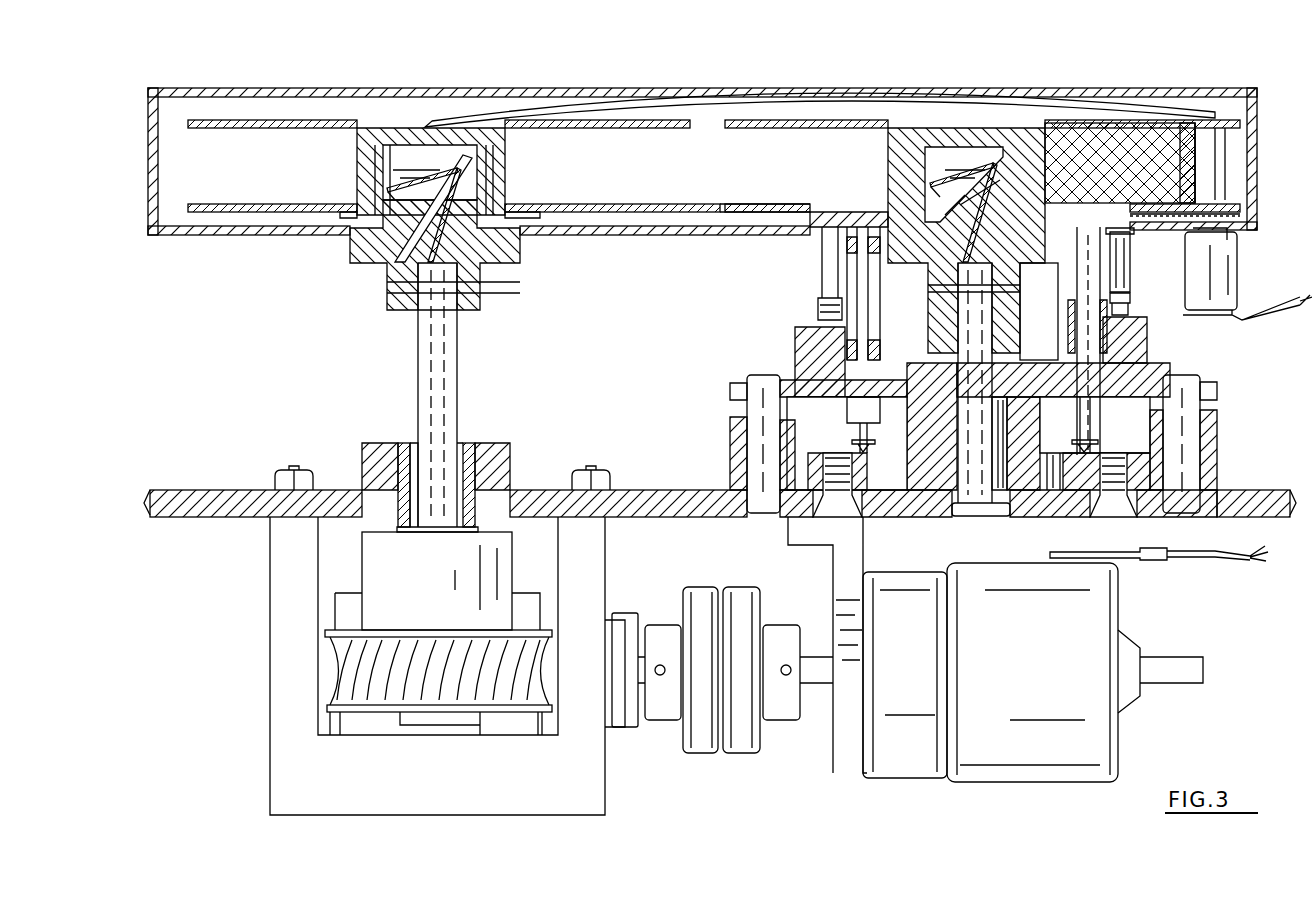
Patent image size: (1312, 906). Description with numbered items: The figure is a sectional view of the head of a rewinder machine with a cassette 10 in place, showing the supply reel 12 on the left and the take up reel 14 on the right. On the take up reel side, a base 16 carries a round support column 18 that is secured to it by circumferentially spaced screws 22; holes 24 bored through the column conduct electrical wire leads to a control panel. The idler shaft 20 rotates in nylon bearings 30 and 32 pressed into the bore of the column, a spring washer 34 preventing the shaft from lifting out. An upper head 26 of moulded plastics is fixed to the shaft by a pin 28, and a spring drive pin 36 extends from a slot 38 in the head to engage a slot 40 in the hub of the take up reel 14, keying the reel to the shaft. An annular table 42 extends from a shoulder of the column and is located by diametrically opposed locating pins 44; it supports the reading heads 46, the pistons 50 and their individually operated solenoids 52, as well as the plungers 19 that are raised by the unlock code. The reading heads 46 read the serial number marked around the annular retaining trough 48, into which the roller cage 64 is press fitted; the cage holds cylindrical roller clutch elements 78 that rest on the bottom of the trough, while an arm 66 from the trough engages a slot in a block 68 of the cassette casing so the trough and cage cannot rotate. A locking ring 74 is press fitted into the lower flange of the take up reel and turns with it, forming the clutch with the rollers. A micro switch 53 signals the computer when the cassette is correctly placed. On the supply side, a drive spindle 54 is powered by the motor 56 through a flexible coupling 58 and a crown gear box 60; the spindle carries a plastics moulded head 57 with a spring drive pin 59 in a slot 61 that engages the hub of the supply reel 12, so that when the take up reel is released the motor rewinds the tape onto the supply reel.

The cassette 10 is at (1024, 82).
The supply reel 12 is at (285, 212).
The take up reel 14 is at (1148, 128).
The base 16 is at (1140, 517).
The support column 18 is at (1040, 480).
The plungers 19 is at (1118, 272).
The idler shaft 20 is at (930, 510).
The screws 22 is at (1115, 517).
The holes 24 is at (895, 460).
The upper head 26 is at (1012, 330).
The pin 28 is at (1012, 300).
The nylon bearing 30 is at (1012, 362).
The nylon bearing 32 is at (1020, 516).
The spring washer 34 is at (965, 503).
The spring drive pin 36 is at (965, 150).
The slot 38 is at (950, 160).
The slot 40 is at (918, 128).
The annular table 42 is at (1158, 385).
The locating pins 44 is at (758, 445).
The reading heads 46 is at (820, 262).
The annular retaining trough 48 is at (798, 222).
The pistons 50 is at (1118, 285).
The solenoid 52 is at (1128, 308).
The micro switch 53 is at (1242, 270).
The drive spindle 54 is at (445, 400).
The motor 56 is at (980, 748).
The plastics moulded head 57 is at (500, 96).
The flexible coupling 58 is at (700, 750).
The spring drive pin 59 is at (400, 170).
The crown gear box 60 is at (388, 685).
The slot 61 is at (450, 160).
The roller cage 64 is at (1110, 120).
The arm 66 is at (1190, 208).
The block 68 is at (1240, 216).
The locking ring 74 is at (1170, 176).
The cylindrical roller clutch element 78 is at (1178, 126).